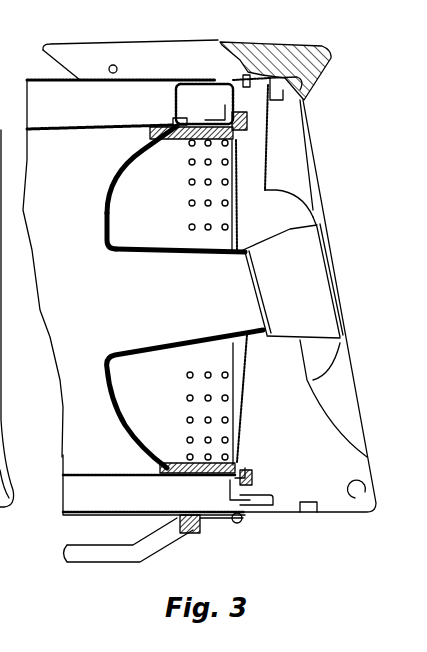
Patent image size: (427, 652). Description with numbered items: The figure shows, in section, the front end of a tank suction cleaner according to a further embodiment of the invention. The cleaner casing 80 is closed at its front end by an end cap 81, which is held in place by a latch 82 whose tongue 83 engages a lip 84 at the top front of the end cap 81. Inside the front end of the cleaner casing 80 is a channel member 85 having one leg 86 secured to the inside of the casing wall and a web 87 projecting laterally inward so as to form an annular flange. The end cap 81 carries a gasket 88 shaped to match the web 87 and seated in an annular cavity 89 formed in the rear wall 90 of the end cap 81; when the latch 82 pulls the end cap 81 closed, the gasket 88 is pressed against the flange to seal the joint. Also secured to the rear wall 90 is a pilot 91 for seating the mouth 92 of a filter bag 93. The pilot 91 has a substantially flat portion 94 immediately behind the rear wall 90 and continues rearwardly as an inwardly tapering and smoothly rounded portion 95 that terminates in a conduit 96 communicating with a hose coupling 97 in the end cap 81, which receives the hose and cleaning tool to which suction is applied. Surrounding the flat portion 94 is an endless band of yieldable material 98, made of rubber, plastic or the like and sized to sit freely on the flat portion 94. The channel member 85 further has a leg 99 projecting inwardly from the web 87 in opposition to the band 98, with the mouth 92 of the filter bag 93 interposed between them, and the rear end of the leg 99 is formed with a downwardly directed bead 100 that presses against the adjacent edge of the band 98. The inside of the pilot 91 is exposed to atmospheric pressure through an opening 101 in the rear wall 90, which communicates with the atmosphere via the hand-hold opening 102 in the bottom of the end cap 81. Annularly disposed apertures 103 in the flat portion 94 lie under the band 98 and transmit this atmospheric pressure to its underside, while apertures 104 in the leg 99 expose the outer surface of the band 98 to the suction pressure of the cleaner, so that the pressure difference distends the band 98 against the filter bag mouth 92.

The cleaner casing 80 is at (50, 78).
The end cap 81 is at (288, 152).
The latch 82 is at (177, 47).
The tongue 83 is at (320, 82).
The lip 84 is at (303, 98).
The channel member 85 is at (207, 93).
The leg 86 is at (221, 68).
The web 87 is at (227, 103).
The gasket 88 is at (247, 473).
The annular cavity 89 is at (253, 485).
The rear wall 90 is at (243, 388).
The pilot 91 is at (106, 205).
The mouth 92 is at (223, 480).
The filter bag 93 is at (103, 460).
The flat portion 94 is at (193, 147).
The inwardly tapering and smoothly rounded portion 95 is at (132, 157).
The conduit 96 is at (205, 254).
The hose coupling 97 is at (315, 268).
The endless band of yieldable material 98 is at (235, 128).
The leg 99 is at (185, 480).
The bead 100 is at (177, 118).
The opening 101 is at (238, 195).
The hand-hold opening 102 is at (312, 507).
The apertures 103 is at (189, 226).
The apertures 104 is at (180, 120).